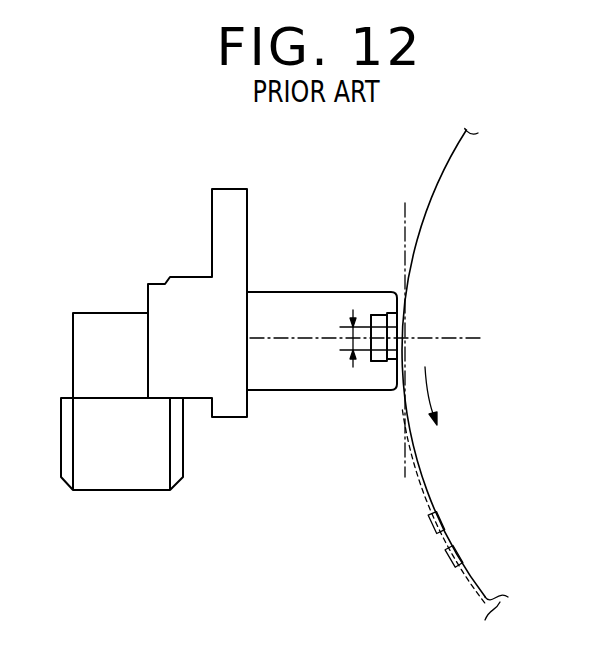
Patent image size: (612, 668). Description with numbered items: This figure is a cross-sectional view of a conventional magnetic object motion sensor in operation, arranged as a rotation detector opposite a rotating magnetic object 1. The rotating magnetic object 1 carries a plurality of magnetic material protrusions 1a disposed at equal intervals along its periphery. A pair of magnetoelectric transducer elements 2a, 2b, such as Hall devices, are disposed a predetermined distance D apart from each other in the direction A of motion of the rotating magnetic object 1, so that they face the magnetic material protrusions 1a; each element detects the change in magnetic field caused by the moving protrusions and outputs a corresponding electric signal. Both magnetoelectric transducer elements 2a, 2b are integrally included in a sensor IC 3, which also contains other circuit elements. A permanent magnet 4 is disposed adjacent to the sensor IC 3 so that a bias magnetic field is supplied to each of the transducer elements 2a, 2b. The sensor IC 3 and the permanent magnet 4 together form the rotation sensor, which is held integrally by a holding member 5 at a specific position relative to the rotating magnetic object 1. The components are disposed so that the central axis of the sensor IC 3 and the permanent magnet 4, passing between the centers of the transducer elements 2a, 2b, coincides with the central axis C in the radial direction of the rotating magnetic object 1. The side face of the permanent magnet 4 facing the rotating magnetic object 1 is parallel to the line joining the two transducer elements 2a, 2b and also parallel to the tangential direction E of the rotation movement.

The rotating magnetic object 1 is at (449, 160).
The magnetic material protrusions 1a is at (433, 521).
The magnetoelectric transducer element 2a is at (398, 324).
The magnetoelectric transducer element 2b is at (398, 348).
The sensor IC 3 is at (392, 362).
The permanent magnet 4 is at (372, 362).
The holding member 5 is at (292, 290).
The direction of motion A is at (427, 385).
The central axis C is at (484, 331).
The predetermined distance D is at (339, 333).
The tangential direction E is at (400, 220).